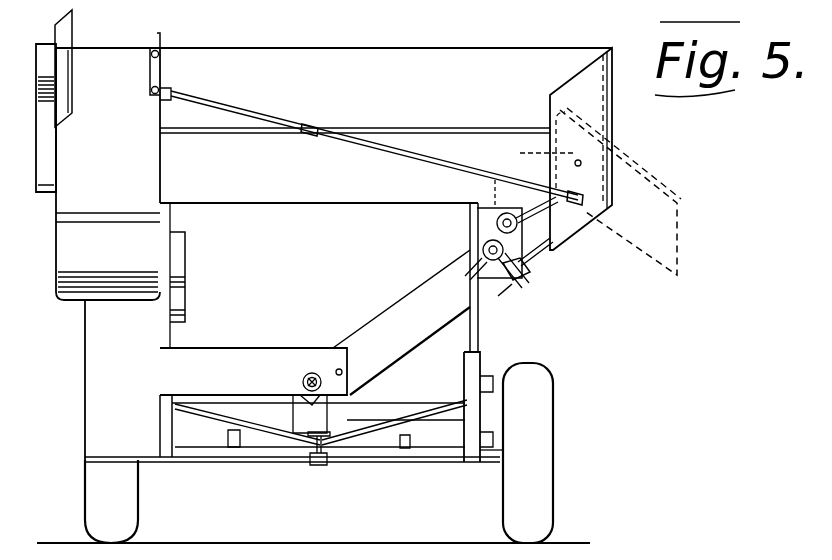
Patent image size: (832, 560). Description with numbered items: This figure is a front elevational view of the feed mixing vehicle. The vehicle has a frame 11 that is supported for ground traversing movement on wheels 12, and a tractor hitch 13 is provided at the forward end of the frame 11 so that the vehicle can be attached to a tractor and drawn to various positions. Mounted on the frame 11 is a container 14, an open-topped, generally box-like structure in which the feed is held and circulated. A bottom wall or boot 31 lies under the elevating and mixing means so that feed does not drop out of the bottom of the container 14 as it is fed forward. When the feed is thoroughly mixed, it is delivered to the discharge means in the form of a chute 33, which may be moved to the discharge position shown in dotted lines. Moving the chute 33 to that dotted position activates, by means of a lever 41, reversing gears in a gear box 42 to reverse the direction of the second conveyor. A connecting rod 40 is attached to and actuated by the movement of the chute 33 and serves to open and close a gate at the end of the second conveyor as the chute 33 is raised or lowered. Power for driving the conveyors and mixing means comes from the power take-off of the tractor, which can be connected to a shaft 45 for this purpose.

The frame 11 is at (372, 413).
The wheels 12 is at (128, 497).
The tractor hitch 13 is at (253, 420).
The container 14 is at (472, 40).
The bottom wall or boot 31 is at (576, 24).
The discharge chute 33 is at (593, 105).
The connecting rod 40 is at (452, 167).
The lever 41 is at (531, 248).
The gear box 42 is at (513, 240).
The shaft 45 is at (312, 373).